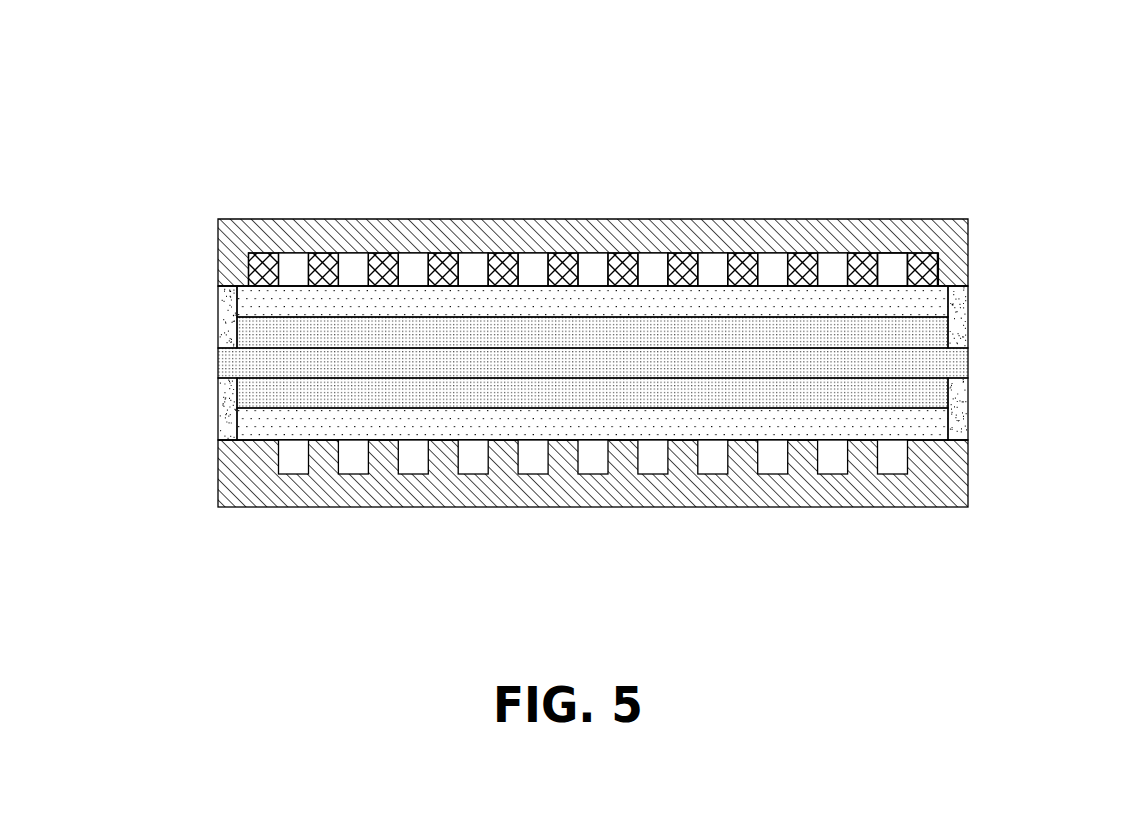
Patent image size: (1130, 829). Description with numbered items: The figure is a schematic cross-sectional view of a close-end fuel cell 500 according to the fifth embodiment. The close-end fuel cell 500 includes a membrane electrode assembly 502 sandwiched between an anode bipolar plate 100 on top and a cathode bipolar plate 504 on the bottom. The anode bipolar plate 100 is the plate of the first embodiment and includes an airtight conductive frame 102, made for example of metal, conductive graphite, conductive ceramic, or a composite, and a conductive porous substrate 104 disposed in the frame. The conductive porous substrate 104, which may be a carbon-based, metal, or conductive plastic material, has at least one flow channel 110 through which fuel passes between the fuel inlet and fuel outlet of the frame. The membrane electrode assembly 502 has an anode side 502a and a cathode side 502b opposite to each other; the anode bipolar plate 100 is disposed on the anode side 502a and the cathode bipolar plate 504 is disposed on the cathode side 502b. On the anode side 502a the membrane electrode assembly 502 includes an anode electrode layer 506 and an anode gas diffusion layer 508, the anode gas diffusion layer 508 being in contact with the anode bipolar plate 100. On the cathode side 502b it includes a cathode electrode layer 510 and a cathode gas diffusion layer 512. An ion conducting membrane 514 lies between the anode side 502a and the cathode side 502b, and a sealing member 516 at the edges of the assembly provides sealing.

The close-end fuel cell 500 is at (259, 98).
The anode bipolar plate 100 is at (1058, 210).
The airtight conductive frame 102 is at (958, 232).
The conductive porous substrate 104 is at (937, 268).
The flow channel 110 is at (888, 270).
The membrane electrode assembly 502 is at (133, 270).
The anode side 502a is at (230, 278).
The cathode side 502b is at (240, 448).
The cathode bipolar plate 504 is at (953, 472).
The anode electrode layer 506 is at (950, 345).
The anode gas diffusion layer 508 is at (935, 302).
The cathode electrode layer 510 is at (937, 395).
The cathode gas diffusion layer 512 is at (940, 420).
The ion conducting membrane 514 is at (868, 362).
The sealing member 516 is at (225, 322).